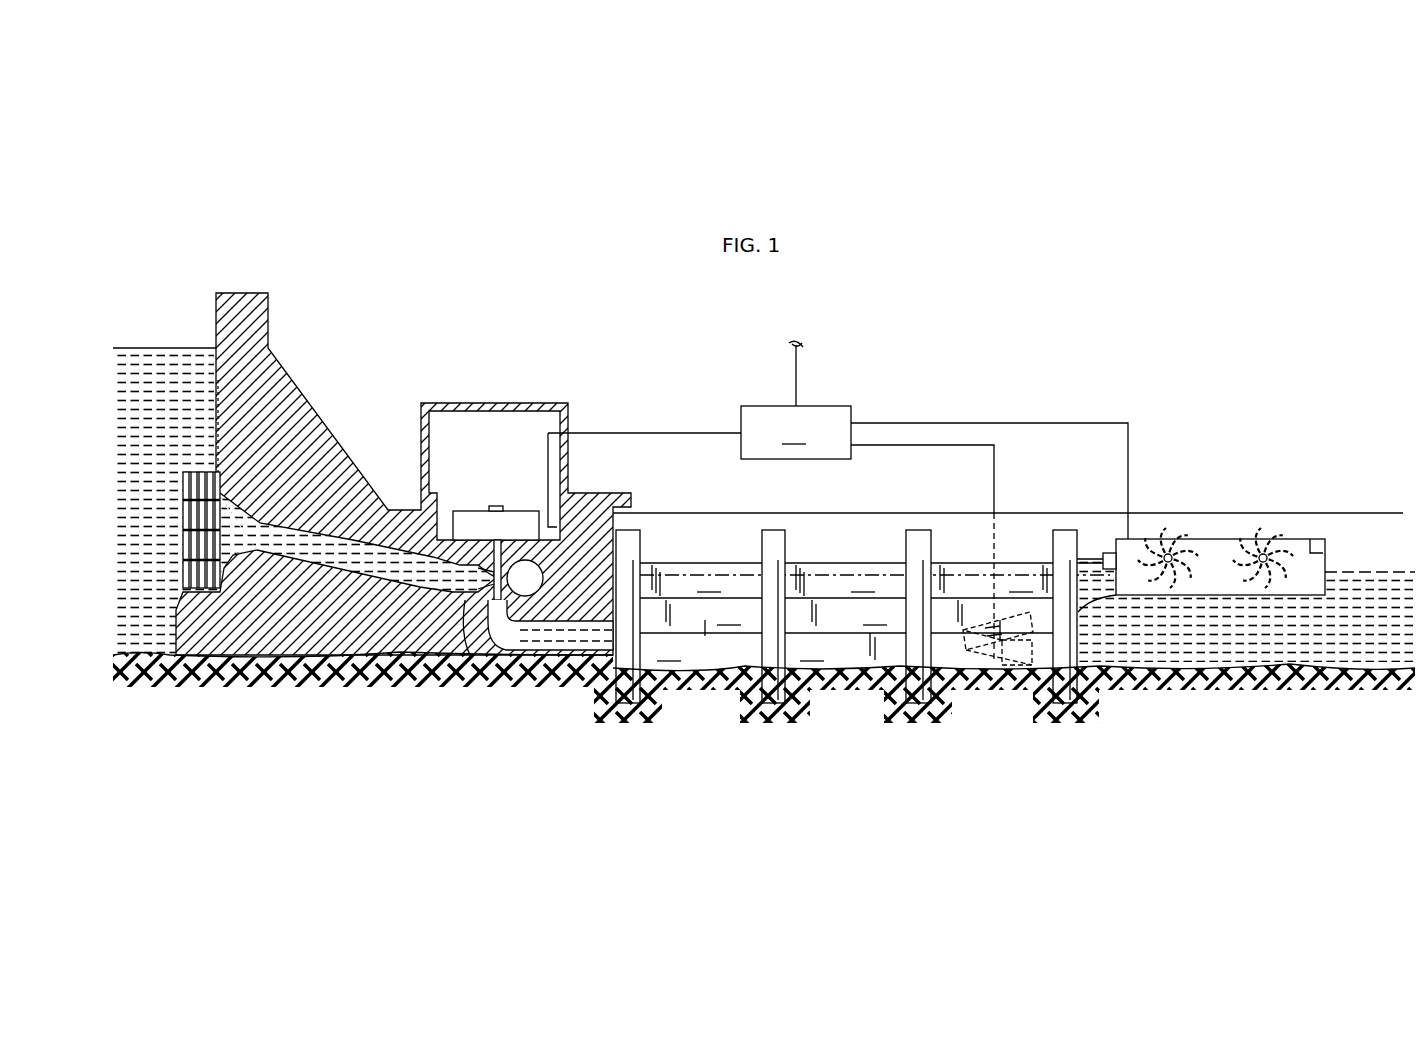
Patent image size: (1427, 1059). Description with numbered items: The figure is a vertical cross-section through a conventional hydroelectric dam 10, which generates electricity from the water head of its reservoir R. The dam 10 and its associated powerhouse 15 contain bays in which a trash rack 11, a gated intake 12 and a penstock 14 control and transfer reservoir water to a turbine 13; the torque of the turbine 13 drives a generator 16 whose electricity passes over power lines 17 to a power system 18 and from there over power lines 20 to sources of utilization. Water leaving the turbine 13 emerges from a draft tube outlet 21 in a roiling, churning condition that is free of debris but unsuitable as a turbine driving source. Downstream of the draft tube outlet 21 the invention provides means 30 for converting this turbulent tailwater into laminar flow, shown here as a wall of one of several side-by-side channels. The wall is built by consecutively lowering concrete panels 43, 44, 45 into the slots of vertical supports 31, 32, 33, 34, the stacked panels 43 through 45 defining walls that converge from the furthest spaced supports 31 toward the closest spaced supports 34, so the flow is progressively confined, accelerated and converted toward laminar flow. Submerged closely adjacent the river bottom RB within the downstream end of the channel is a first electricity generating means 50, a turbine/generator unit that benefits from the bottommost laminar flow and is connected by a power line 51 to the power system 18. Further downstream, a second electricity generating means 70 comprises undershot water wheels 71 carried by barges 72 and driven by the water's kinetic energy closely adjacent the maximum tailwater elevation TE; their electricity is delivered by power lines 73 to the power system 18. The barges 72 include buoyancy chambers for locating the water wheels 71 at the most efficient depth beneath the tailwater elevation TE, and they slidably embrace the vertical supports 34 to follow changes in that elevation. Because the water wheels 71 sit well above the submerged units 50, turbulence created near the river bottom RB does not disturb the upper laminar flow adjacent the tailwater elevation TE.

The hydroelectric dam 10 is at (527, 250).
The trash rack 11 is at (198, 466).
The gated intake 12 is at (247, 518).
The turbine 13 is at (470, 652).
The penstock 14 is at (313, 557).
The powerhouse 15 is at (480, 400).
The generator 16 is at (478, 518).
The power lines 17 is at (612, 432).
The power system 18 is at (796, 432).
The power lines 20 is at (796, 372).
The draft tube outlet 21 is at (572, 640).
The means for converting turbulent tailwater flow into laminar flow 30 is at (1008, 573).
The vertical support 31 is at (642, 549).
The vertical support 32 is at (789, 549).
The vertical support 33 is at (917, 528).
The vertical support 34 is at (1065, 528).
The concrete panel 43 is at (846, 647).
The concrete panel 44 is at (846, 612).
The concrete panel 45 is at (846, 578).
The first electricity generating means 50 is at (995, 650).
The power line 51 is at (994, 450).
The second electricity generating means 70 is at (1201, 594).
The undershot water wheel 71 is at (1168, 532).
The barge 72 is at (1311, 582).
The power lines 73 is at (1128, 447).
The reservoir R is at (170, 385).
The river bottom RB is at (858, 668).
The tailwater elevation TE is at (1352, 572).